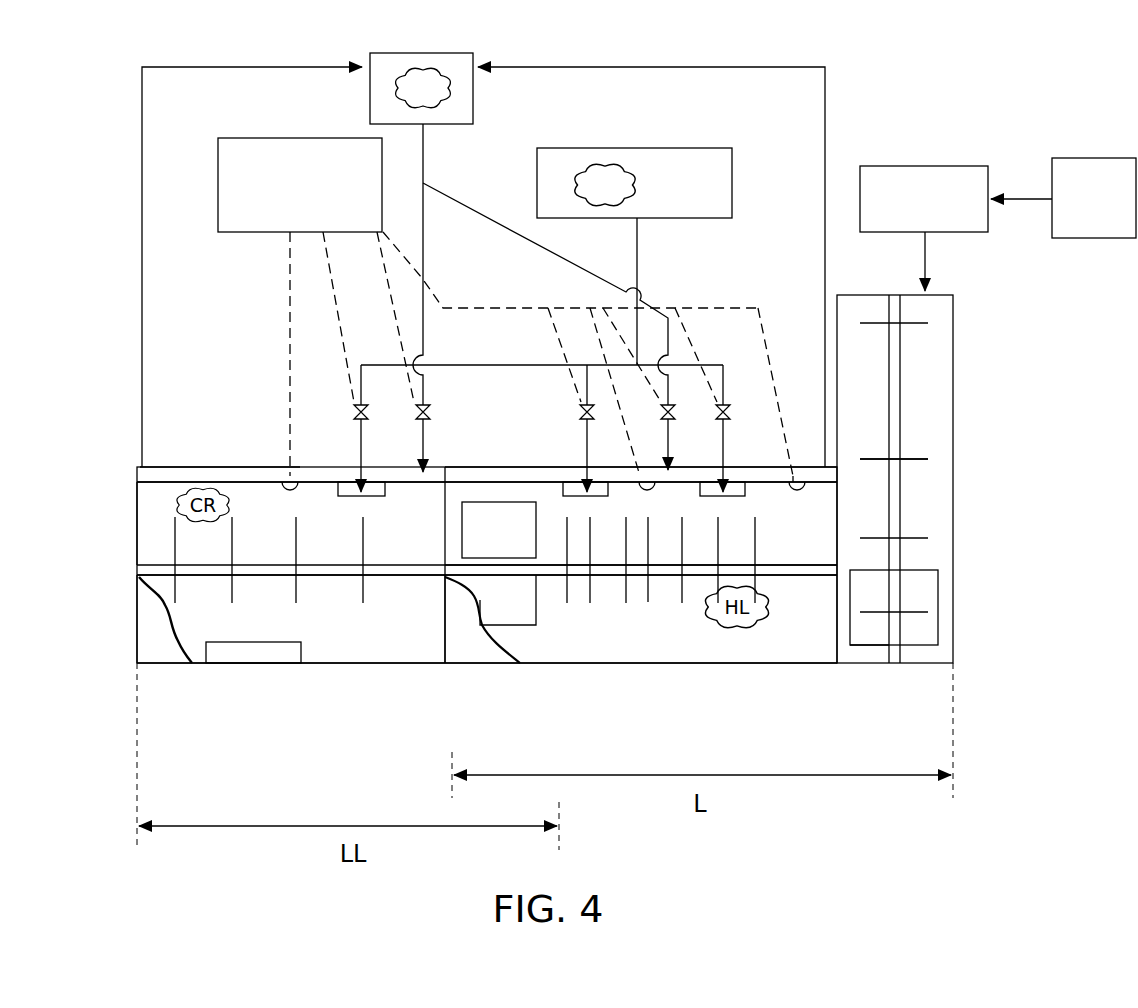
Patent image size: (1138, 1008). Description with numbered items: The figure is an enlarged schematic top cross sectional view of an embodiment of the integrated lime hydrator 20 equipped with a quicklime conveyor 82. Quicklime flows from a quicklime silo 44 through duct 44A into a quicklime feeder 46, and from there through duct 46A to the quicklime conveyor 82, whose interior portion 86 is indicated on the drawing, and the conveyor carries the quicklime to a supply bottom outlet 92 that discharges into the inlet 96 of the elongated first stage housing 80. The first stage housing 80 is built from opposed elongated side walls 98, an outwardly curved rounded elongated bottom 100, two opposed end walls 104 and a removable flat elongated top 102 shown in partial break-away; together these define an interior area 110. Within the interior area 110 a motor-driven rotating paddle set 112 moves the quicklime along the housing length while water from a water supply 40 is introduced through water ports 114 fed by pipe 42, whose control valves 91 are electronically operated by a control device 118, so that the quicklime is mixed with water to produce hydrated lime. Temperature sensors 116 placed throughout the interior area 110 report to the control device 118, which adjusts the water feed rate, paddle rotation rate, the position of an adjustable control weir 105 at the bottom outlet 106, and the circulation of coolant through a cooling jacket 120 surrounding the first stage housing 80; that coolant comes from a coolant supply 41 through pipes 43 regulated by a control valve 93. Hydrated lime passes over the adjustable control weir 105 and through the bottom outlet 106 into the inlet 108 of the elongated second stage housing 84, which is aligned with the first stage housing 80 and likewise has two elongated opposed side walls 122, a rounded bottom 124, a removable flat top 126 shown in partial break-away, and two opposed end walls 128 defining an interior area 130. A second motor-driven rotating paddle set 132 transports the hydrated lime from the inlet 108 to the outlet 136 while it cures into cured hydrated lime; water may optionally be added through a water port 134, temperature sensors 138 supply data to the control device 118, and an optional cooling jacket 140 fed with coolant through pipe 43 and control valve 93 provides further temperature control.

The integrated lime hydrator 20 is at (714, 126).
The water supply 40 is at (634, 183).
The coolant supply 41 is at (476, 96).
The pipe 42 is at (640, 270).
The pipe 43 is at (215, 64).
The quicklime silo 44 is at (1094, 198).
The duct 44A is at (1022, 198).
The quicklime feeder 46 is at (924, 199).
The duct 46A is at (930, 252).
The first stage housing 80 is at (782, 666).
The quicklime conveyor 82 is at (969, 424).
The second stage housing 84 is at (400, 666).
The tower conduit 86 is at (906, 461).
The control valve 91 is at (366, 417).
The supply bottom outlet 92 is at (940, 608).
The control valve 93 is at (428, 417).
The inlet 96 is at (858, 633).
The elongated side walls 98 is at (798, 476).
The rounded elongated bottom 100 is at (658, 598).
The flat elongated top 102 is at (480, 668).
The end walls 104 is at (443, 637).
The adjustable control weir 105 is at (503, 612).
The bottom outlet 106 is at (523, 510).
The inlet 108 is at (466, 522).
The first stage housing interior area 110 is at (738, 642).
The rotating paddle set 112 is at (622, 598).
The water port 114 is at (590, 495).
The temperature sensors 116 is at (652, 490).
The control device 118 is at (300, 185).
The cooling jacket 120 is at (496, 470).
The side walls 122 is at (240, 480).
The rounded bottom 124 is at (352, 633).
The flat top 126 is at (157, 647).
The end walls 128 is at (153, 533).
The interior area 130 is at (317, 625).
The rotating paddle set 132 is at (206, 666).
The water port 134 is at (376, 494).
The outlet 136 is at (255, 668).
The temperature sensors 138 is at (296, 490).
The cooling jacket 140 is at (170, 470).